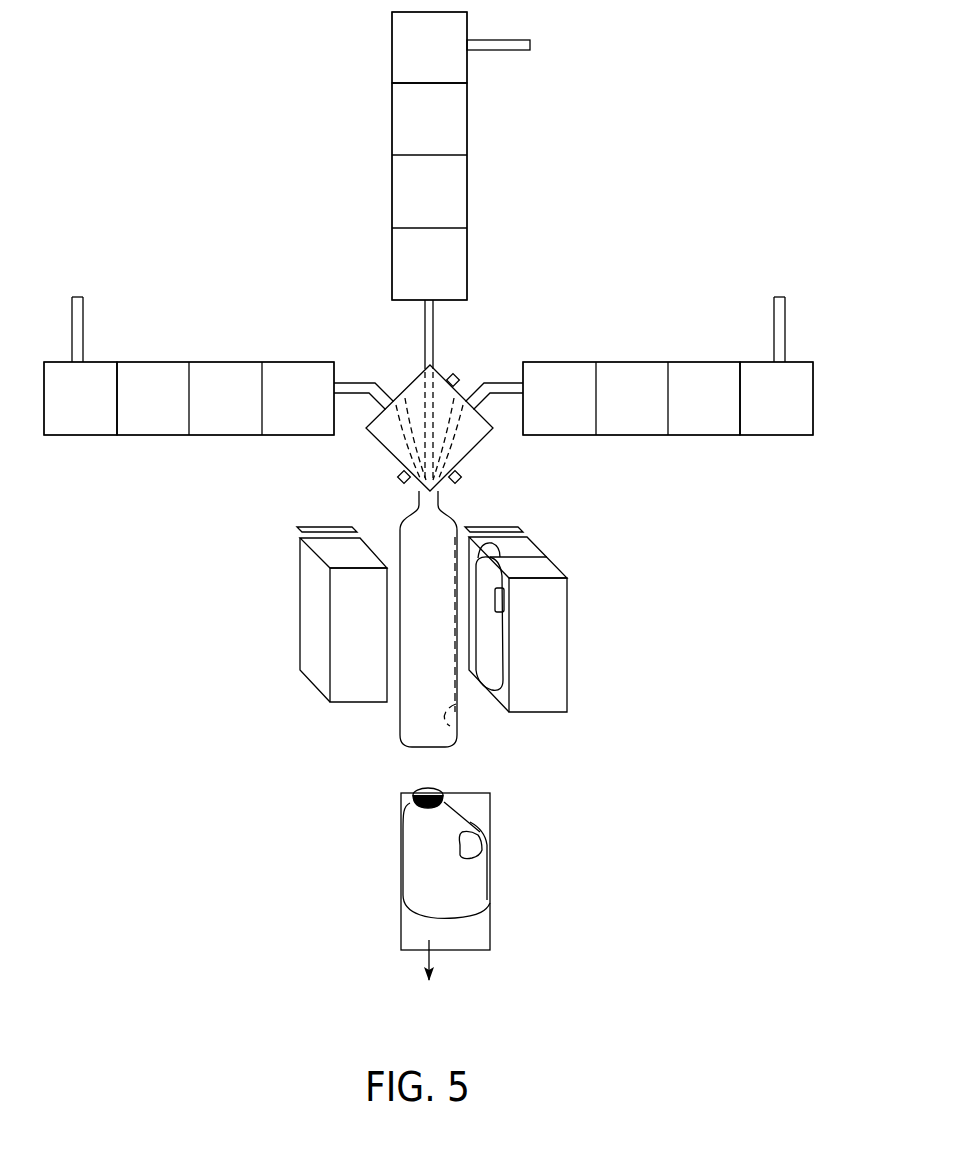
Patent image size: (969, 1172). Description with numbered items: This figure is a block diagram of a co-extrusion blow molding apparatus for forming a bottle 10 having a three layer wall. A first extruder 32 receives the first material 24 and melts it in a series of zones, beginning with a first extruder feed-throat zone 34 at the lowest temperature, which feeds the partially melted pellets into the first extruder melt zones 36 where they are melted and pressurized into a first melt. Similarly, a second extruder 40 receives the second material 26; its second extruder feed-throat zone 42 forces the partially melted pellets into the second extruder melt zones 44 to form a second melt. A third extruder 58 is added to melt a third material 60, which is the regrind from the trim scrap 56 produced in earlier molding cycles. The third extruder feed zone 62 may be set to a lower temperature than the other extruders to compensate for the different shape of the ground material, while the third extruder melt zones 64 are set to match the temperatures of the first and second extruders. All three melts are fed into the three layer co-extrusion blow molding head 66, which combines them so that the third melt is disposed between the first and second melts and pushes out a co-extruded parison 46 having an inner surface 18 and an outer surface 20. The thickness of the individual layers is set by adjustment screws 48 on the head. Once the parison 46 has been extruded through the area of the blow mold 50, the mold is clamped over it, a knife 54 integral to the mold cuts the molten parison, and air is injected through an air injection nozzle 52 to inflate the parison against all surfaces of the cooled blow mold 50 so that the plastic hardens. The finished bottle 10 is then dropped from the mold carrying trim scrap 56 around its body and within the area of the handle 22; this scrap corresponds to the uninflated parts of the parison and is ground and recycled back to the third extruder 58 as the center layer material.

The multi-layer bottle 10 is at (401, 862).
The inner surface 18 is at (460, 731).
The outer surface 20 is at (398, 722).
The handle 22 is at (478, 828).
The first material 24 is at (77, 275).
The second material 26 is at (779, 275).
The first extruder 32 is at (218, 360).
The first extruder feed-throat zone 34 is at (82, 437).
The first extruder melt zones 36 is at (173, 437).
The second extruder 40 is at (630, 360).
The second extruder feed-throat zone 42 is at (770, 437).
The second extruder melt zones 44 is at (582, 437).
The co-extruded parison 46 is at (452, 526).
The adjustment screws 48 is at (458, 374).
The blow mold 50 is at (567, 652).
The air injection nozzle 52 is at (563, 557).
The knife 54 is at (518, 530).
The trim scrap 56 is at (483, 930).
The third extruder 58 is at (469, 186).
The third material 60 is at (549, 43).
The third extruder feed zone 62 is at (392, 45).
The third extruder melt zones 64 is at (392, 143).
The three layer co-extrusion blow molding head 66 is at (438, 372).